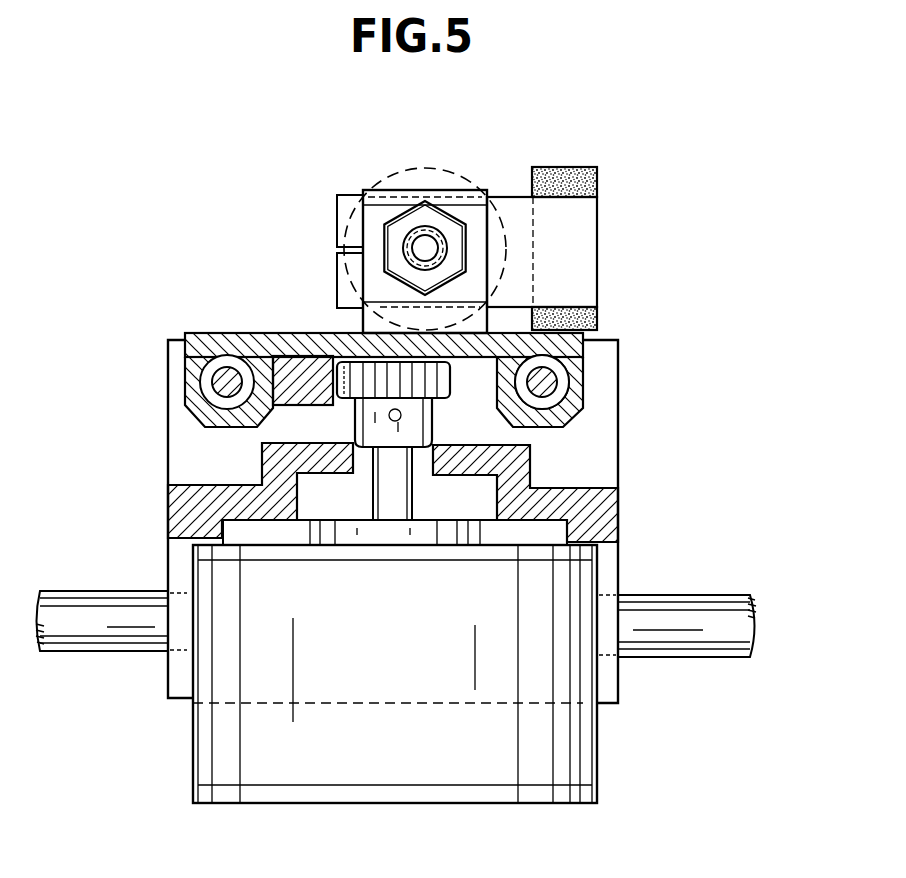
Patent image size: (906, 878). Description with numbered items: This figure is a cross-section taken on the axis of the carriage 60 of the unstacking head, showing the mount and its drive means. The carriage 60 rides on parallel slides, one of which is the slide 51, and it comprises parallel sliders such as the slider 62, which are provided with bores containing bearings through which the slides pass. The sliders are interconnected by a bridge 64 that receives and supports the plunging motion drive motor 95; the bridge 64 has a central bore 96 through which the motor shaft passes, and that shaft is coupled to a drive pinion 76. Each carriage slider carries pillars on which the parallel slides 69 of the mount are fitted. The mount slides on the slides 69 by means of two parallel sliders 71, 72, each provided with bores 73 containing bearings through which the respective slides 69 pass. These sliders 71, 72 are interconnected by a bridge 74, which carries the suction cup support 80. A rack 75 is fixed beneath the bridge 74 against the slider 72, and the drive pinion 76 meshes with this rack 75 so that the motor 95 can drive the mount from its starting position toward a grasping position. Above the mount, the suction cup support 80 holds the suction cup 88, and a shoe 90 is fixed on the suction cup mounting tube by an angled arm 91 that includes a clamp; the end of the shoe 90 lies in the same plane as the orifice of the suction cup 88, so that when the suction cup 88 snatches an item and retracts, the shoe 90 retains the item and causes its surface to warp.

The slide 51 is at (108, 608).
The carriage 60 is at (626, 525).
The slider 62 is at (608, 580).
The bridge 64 is at (313, 457).
The slide 69 is at (218, 392).
The slider 71 is at (573, 418).
The slider 72 is at (208, 413).
The bore 73 is at (208, 368).
The bridge 74 is at (347, 347).
The rack 75 is at (305, 380).
The drive pinion 76 is at (433, 378).
The suction cup support 80 is at (403, 186).
The suction cup 88 is at (452, 182).
The shoe 90 is at (573, 177).
The angled arm 91 is at (347, 210).
The plunging motion drive motor 95 is at (573, 760).
The central bore 96 is at (365, 463).